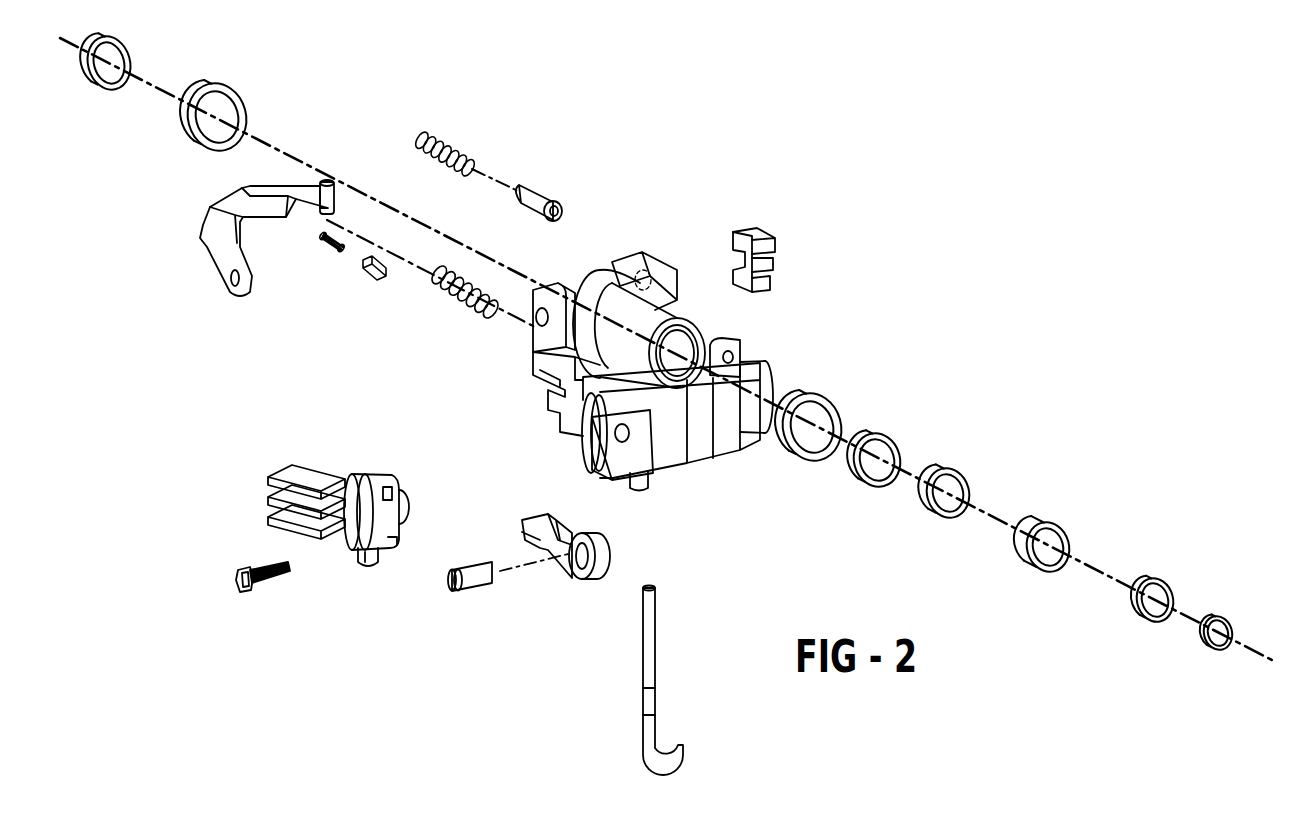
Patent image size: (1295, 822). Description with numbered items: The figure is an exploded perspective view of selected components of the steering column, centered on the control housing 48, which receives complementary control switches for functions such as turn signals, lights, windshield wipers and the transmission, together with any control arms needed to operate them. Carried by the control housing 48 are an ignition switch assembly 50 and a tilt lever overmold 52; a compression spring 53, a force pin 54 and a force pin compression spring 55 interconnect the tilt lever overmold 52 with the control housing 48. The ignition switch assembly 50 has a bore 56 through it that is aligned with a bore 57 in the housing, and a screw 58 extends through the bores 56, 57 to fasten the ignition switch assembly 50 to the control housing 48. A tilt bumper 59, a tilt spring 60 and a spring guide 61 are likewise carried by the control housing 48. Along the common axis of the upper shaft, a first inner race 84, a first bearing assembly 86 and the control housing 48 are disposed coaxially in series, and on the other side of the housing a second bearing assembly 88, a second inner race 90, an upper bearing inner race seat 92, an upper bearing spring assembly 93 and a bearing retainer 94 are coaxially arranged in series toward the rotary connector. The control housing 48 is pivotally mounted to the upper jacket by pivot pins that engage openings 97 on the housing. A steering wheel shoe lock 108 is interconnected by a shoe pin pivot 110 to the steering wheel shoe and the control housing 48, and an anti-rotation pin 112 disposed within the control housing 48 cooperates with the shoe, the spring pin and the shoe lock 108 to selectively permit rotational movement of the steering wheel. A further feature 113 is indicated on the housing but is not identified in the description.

The control housing 48 is at (623, 356).
The ignition switch assembly 50 is at (338, 517).
The tilt lever overmold 52 is at (229, 293).
The compression spring 53 is at (443, 296).
The force pin 54 is at (372, 282).
The force pin compression spring 55 is at (332, 255).
The bore 56 is at (360, 560).
The bore 57 is at (600, 470).
The screw 58 is at (268, 582).
The tilt bumper 59 is at (770, 240).
The tilt spring 60 is at (455, 142).
The spring guide 61 is at (535, 188).
The first inner race 84 is at (132, 56).
The first bearing assembly 86 is at (247, 126).
The second bearing assembly 88 is at (840, 410).
The second inner race 90 is at (903, 450).
The upper bearing inner race seat 92 is at (935, 512).
The upper bearing spring assembly 93 is at (1070, 540).
The bearing retainer 94 is at (1218, 616).
The openings 97 is at (536, 320).
The steering wheel shoe lock 108 is at (520, 530).
The shoe pin pivot 110 is at (480, 583).
The anti-rotation pin 112 is at (652, 660).
The aperture 113 is at (652, 282).